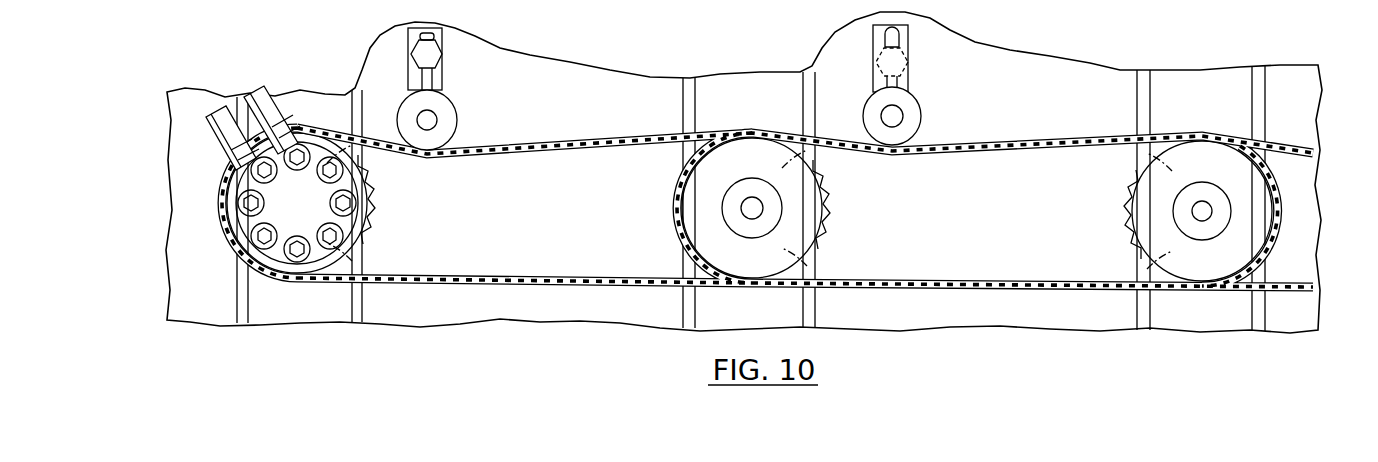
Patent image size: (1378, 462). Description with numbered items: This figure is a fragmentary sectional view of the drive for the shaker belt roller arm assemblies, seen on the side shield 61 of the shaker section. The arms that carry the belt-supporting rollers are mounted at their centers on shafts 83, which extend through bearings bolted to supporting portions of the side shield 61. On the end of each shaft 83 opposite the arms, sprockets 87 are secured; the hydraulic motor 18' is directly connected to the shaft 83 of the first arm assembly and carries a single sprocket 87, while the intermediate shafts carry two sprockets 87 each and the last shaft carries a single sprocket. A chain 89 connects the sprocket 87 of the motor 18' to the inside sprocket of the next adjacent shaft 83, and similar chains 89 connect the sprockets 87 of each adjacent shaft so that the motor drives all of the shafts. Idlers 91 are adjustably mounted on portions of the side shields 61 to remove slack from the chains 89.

The hydraulic motor 18' is at (297, 203).
The side shields 61 is at (975, 227).
The shafts 83 is at (753, 205).
The sprockets 87 is at (367, 204).
The chain 89 is at (588, 136).
The idlers 91 is at (444, 114).